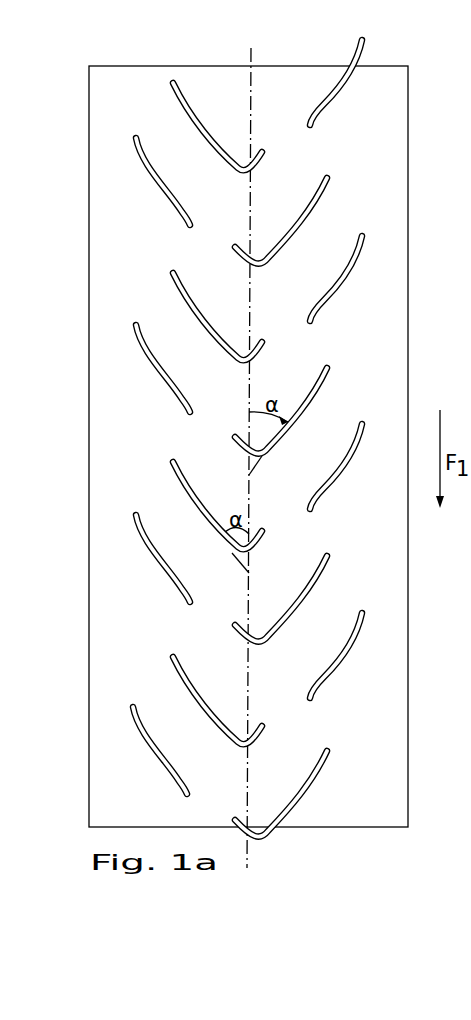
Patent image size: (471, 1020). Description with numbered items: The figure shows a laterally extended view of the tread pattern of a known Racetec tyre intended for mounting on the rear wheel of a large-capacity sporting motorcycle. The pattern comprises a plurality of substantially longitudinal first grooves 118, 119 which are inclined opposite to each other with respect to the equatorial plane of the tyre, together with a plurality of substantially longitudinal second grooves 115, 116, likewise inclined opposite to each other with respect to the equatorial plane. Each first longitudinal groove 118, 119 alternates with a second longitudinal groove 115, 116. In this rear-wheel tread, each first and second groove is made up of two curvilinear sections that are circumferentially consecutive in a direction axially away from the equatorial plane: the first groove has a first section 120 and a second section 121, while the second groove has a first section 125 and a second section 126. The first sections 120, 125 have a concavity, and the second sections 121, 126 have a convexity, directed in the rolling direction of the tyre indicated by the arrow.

The second longitudinal groove 115 is at (350, 482).
The second longitudinal groove 116 is at (147, 555).
The first longitudinal groove 118 is at (182, 498).
The first longitudinal groove 119 is at (323, 392).
The first curvilinear section 120 is at (225, 527).
The second curvilinear section 121 is at (188, 480).
The first curvilinear section 125 is at (313, 507).
The second curvilinear section 126 is at (362, 428).